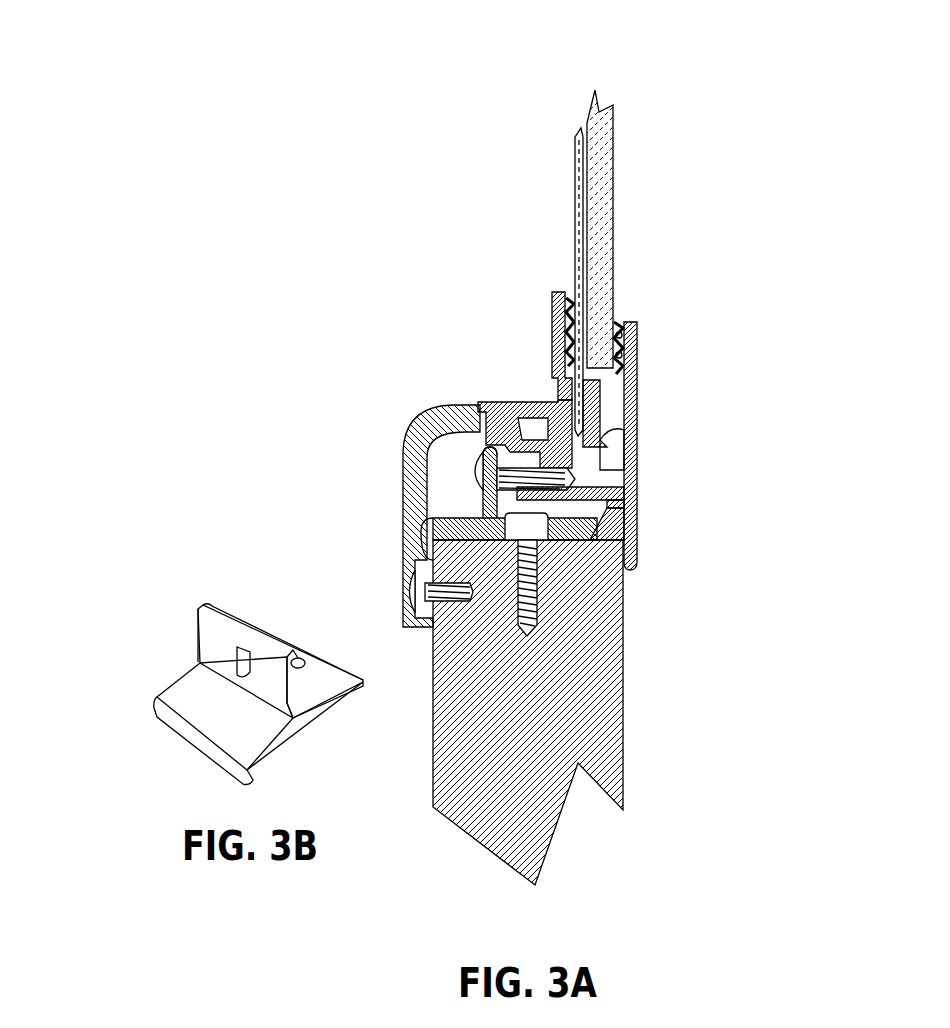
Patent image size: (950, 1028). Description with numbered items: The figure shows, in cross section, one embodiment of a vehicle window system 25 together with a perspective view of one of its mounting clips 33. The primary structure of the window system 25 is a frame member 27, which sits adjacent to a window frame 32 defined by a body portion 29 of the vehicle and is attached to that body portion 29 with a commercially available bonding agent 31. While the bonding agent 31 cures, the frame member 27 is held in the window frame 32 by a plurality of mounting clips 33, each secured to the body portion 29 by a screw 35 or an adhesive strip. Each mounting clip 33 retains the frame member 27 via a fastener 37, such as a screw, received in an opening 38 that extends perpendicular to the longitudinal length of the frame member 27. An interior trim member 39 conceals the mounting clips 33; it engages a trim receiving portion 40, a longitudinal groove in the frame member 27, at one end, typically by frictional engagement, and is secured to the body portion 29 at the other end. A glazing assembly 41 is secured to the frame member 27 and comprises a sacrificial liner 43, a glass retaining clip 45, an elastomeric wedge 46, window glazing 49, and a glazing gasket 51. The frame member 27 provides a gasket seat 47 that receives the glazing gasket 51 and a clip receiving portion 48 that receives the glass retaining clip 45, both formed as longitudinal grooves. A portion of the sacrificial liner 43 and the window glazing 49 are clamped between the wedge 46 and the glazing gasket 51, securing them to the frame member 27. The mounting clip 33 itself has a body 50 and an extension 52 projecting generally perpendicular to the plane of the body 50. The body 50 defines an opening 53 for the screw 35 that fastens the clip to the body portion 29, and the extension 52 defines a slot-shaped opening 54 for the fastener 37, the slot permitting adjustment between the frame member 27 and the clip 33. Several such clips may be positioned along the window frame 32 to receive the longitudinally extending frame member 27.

In FIG. 3A, the window system 25 is at (278, 283).
In FIG. 3A, the frame member 27 is at (636, 447).
In FIG. 3A, the body portion 29 is at (521, 700).
In FIG. 3A, the bonding agent 31 is at (630, 578).
In FIG. 3A, the window frame 32 is at (633, 523).
In FIG. 3A, the mounting clip 33 is at (463, 517).
In FIG. 3B, the mounting clip 33 is at (298, 640).
In FIG. 3A, the screw 35 is at (540, 580).
In FIG. 3A, the fastener 37 is at (600, 477).
In FIG. 3A, the opening 38 is at (630, 512).
In FIG. 3A, the interior trim member 39 is at (500, 405).
In FIG. 3A, the trim receiving portion 40 is at (500, 403).
In FIG. 3A, the glazing assembly 41 is at (500, 122).
In FIG. 3A, the sacrificial liner 43 is at (575, 245).
In FIG. 3A, the glass retaining clip 45 is at (548, 352).
In FIG. 3A, the elastomeric wedge 46 is at (570, 302).
In FIG. 3A, the gasket seat 47 is at (632, 378).
In FIG. 3A, the clip receiving portion 48 is at (633, 460).
In FIG. 3A, the window glazing 49 is at (613, 247).
In FIG. 3A, the body 50 is at (423, 530).
In FIG. 3B, the body 50 is at (312, 710).
In FIG. 3A, the glazing gasket 51 is at (618, 318).
In FIG. 3A, the extension 52 is at (477, 453).
In FIG. 3B, the extension 52 is at (207, 643).
In FIG. 3B, the opening 53 is at (308, 672).
In FIG. 3B, the opening 54 is at (242, 663).